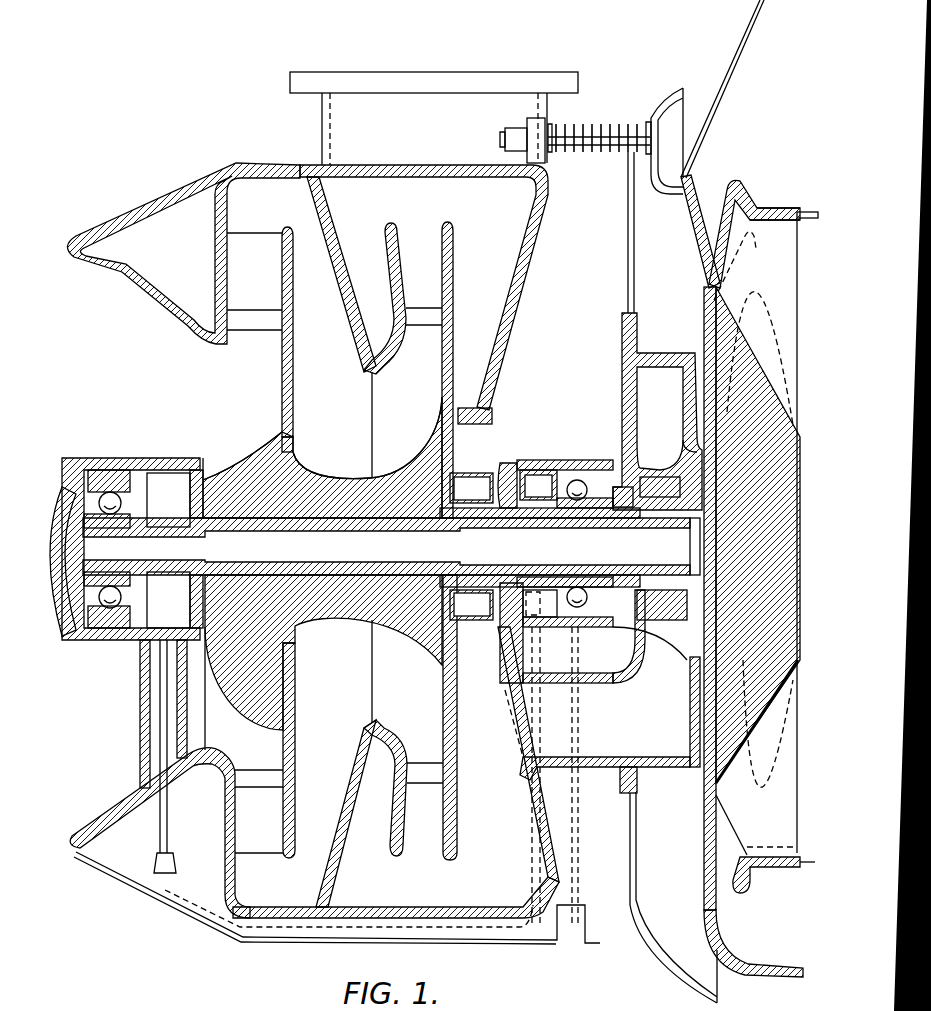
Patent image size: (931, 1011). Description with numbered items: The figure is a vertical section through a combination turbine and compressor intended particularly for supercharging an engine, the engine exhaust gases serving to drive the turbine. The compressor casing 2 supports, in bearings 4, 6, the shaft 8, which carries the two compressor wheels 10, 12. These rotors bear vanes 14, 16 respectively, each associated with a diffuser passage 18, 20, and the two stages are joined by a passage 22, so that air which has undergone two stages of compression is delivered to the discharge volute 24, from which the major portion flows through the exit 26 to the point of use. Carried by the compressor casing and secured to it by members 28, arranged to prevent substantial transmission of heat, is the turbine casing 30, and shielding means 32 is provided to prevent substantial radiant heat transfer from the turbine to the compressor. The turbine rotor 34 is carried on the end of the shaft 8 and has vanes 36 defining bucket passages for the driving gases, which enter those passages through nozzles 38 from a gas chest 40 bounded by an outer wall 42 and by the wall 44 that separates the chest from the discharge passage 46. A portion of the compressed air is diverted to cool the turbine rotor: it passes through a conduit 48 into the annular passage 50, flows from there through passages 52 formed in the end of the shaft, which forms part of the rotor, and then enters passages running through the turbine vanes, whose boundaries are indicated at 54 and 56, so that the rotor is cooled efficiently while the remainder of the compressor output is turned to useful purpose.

The compressor casing 2 is at (197, 197).
The bearing 4 is at (110, 467).
The bearing 6 is at (567, 477).
The shaft 8 is at (90, 537).
The compressor wheel 10 is at (253, 473).
The compressor wheel 12 is at (407, 470).
The vanes 14 is at (220, 401).
The vanes 16 is at (393, 398).
The diffuser passage 18 is at (233, 274).
The diffuser passage 20 is at (403, 268).
The passage 22 is at (310, 361).
The discharge volute 24 is at (483, 270).
The exit 26 is at (448, 76).
The securing members 28 is at (600, 127).
The turbine casing 30 is at (688, 233).
The shielding means 32 is at (628, 248).
The turbine rotor 34 is at (760, 410).
The vanes 36 is at (793, 212).
The nozzles 38 is at (718, 213).
The gas chest 40 is at (752, 136).
The outer wall 42 is at (747, 43).
The wall 44 is at (757, 210).
The discharge passage 46 is at (813, 807).
The conduit 48 is at (586, 745).
The annular passage 50 is at (655, 387).
The passages 52 is at (695, 443).
The vane passage boundary 54 is at (744, 265).
The vane passage boundary 56 is at (760, 322).